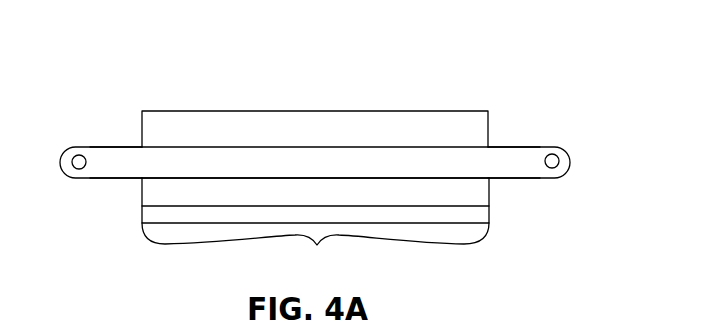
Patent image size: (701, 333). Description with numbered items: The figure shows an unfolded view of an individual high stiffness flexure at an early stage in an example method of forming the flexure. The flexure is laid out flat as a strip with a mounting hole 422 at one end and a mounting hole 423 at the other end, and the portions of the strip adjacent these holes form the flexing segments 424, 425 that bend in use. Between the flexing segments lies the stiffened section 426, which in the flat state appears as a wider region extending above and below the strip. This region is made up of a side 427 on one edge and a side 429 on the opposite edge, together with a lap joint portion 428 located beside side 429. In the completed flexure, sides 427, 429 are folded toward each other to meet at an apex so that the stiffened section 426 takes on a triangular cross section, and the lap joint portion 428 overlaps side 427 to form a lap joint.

The mounting hole 422 is at (76, 156).
The mounting hole 423 is at (556, 153).
The flexing segment 424 is at (118, 162).
The flexing segment 425 is at (513, 162).
The stiffened section 426 is at (315, 231).
The side 427 is at (310, 111).
The lap joint portion 428 is at (153, 213).
The side 429 is at (477, 192).